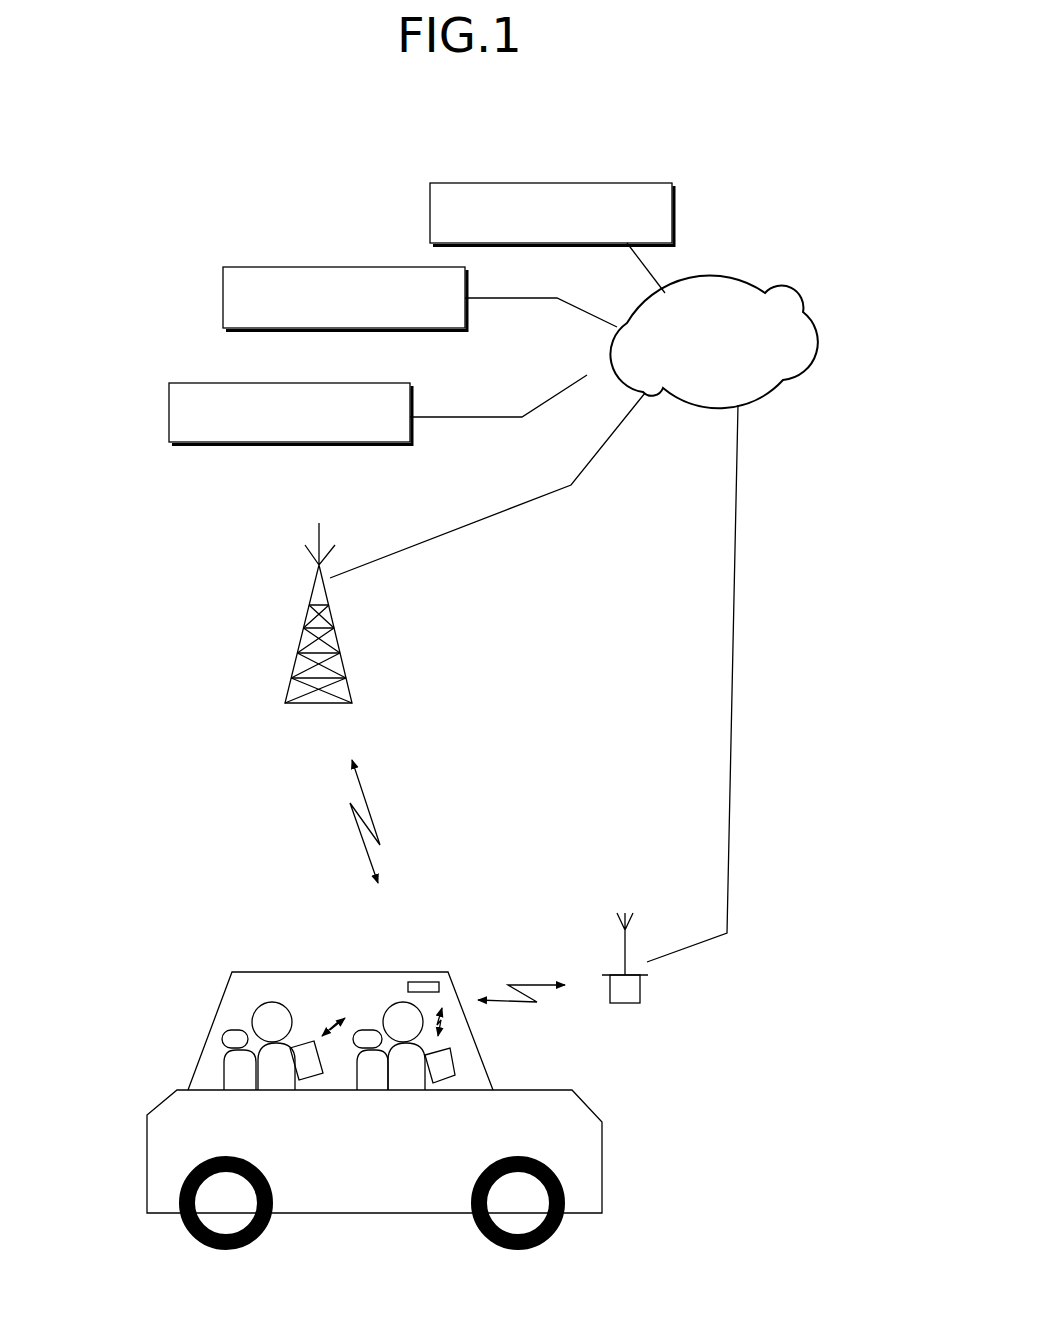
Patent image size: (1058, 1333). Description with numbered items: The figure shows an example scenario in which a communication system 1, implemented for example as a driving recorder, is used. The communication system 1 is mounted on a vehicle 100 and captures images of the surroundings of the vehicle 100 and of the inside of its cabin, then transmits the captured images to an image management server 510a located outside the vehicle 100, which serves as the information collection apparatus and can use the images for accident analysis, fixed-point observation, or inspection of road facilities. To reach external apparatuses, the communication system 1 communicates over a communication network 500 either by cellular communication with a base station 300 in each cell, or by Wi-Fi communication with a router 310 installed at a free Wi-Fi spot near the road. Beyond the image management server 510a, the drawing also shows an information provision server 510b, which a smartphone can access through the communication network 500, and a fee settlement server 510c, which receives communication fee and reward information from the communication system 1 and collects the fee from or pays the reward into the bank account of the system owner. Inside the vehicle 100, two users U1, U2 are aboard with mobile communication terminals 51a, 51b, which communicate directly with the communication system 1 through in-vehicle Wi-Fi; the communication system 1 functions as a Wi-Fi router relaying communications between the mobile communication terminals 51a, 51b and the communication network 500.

The communication system 1 is at (427, 980).
The vehicle 100 is at (213, 1012).
The base station 300 is at (308, 605).
The router 310 is at (642, 992).
The communication network 500 is at (798, 297).
The image management server 510a is at (543, 182).
The information provision server 510b is at (337, 266).
The fee settlement server 510c is at (200, 382).
The mobile communication terminal 51a is at (453, 1062).
The mobile communication terminal 51b is at (317, 1070).
The user U1 is at (412, 1082).
The user U2 is at (270, 1003).